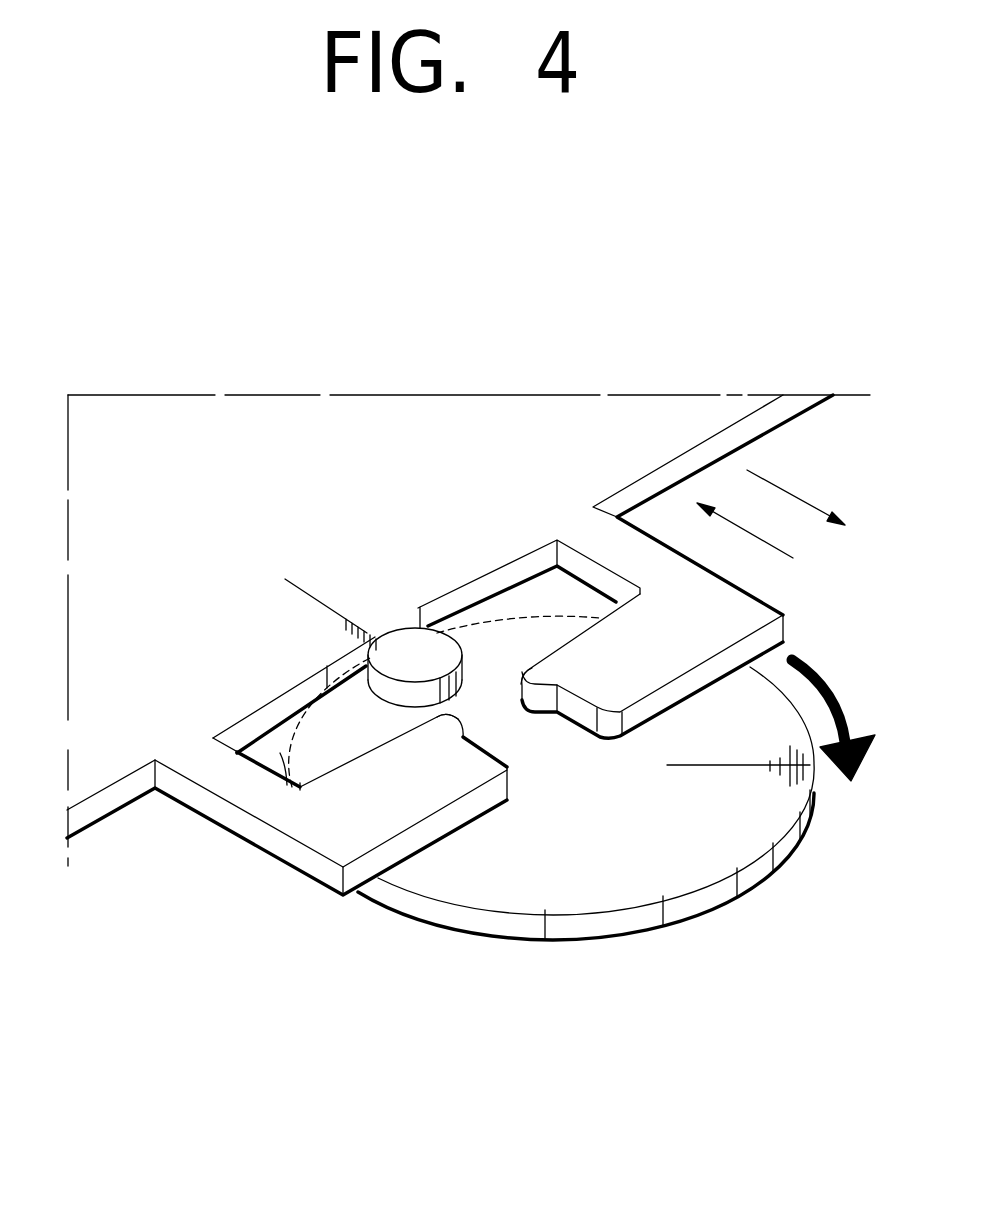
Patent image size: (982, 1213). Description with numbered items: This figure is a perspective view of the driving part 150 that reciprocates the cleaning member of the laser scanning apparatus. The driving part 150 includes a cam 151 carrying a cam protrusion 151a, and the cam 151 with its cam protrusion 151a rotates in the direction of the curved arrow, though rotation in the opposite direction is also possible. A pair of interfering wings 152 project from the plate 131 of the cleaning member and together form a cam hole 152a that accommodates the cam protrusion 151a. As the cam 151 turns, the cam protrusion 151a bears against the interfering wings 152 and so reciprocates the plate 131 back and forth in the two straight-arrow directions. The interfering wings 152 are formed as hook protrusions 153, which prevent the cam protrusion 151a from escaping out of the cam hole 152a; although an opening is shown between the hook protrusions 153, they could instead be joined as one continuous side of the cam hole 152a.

The plate 131 is at (497, 420).
The driving part 150 is at (471, 666).
The cam 151 is at (703, 838).
The cam protrusion 151a is at (410, 648).
The interfering wings 152 is at (603, 686).
The cam hole 152a is at (280, 753).
The hook protrusions 153 is at (530, 675).